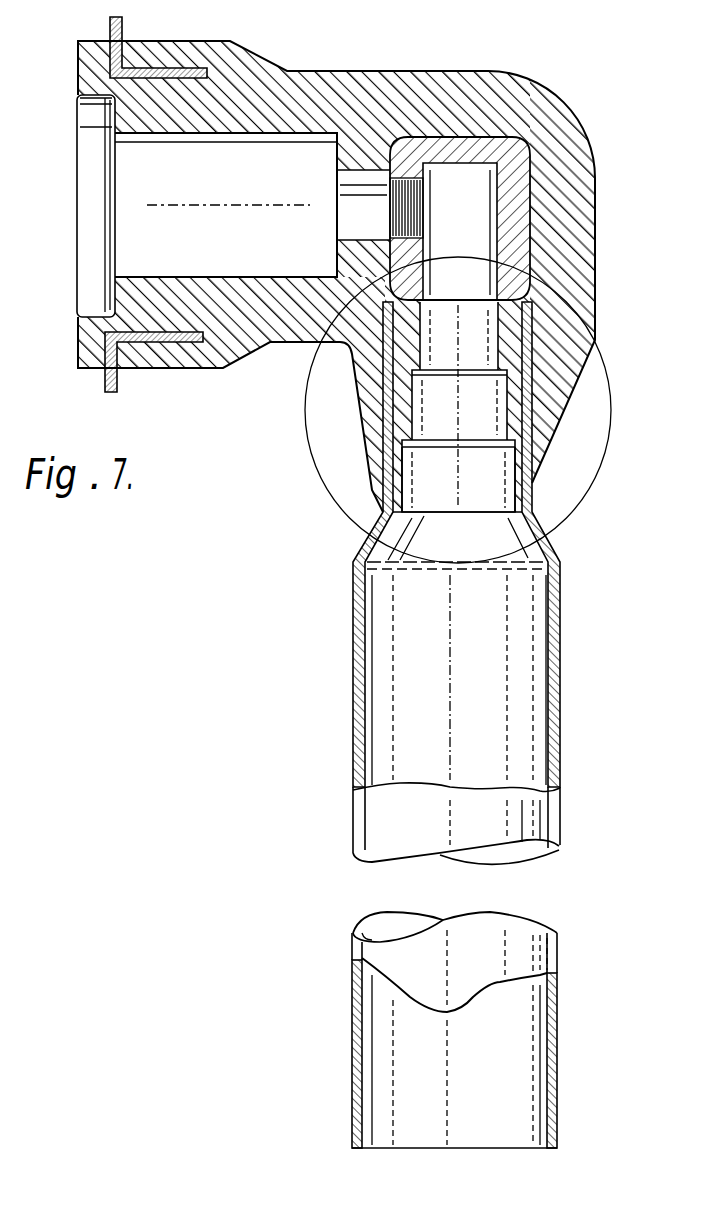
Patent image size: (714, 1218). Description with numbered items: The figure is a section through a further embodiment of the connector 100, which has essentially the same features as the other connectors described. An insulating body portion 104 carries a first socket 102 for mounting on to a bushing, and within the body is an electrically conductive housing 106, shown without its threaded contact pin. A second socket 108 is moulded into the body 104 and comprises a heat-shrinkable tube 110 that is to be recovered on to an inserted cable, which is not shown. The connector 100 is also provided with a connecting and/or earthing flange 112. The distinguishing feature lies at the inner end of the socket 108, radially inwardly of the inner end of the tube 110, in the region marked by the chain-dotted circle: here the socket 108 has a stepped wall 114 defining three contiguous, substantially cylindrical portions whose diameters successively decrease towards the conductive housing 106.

The connector 100 is at (533, 63).
The first socket 102 is at (145, 230).
The insulating body portion 104 is at (587, 202).
The electrically conductive housing 106 is at (450, 145).
The second socket 108 is at (513, 695).
The heat-shrinkable tube 110 is at (353, 666).
The connecting and/or earthing flange 112 is at (118, 391).
The stepped wall 114 is at (511, 471).